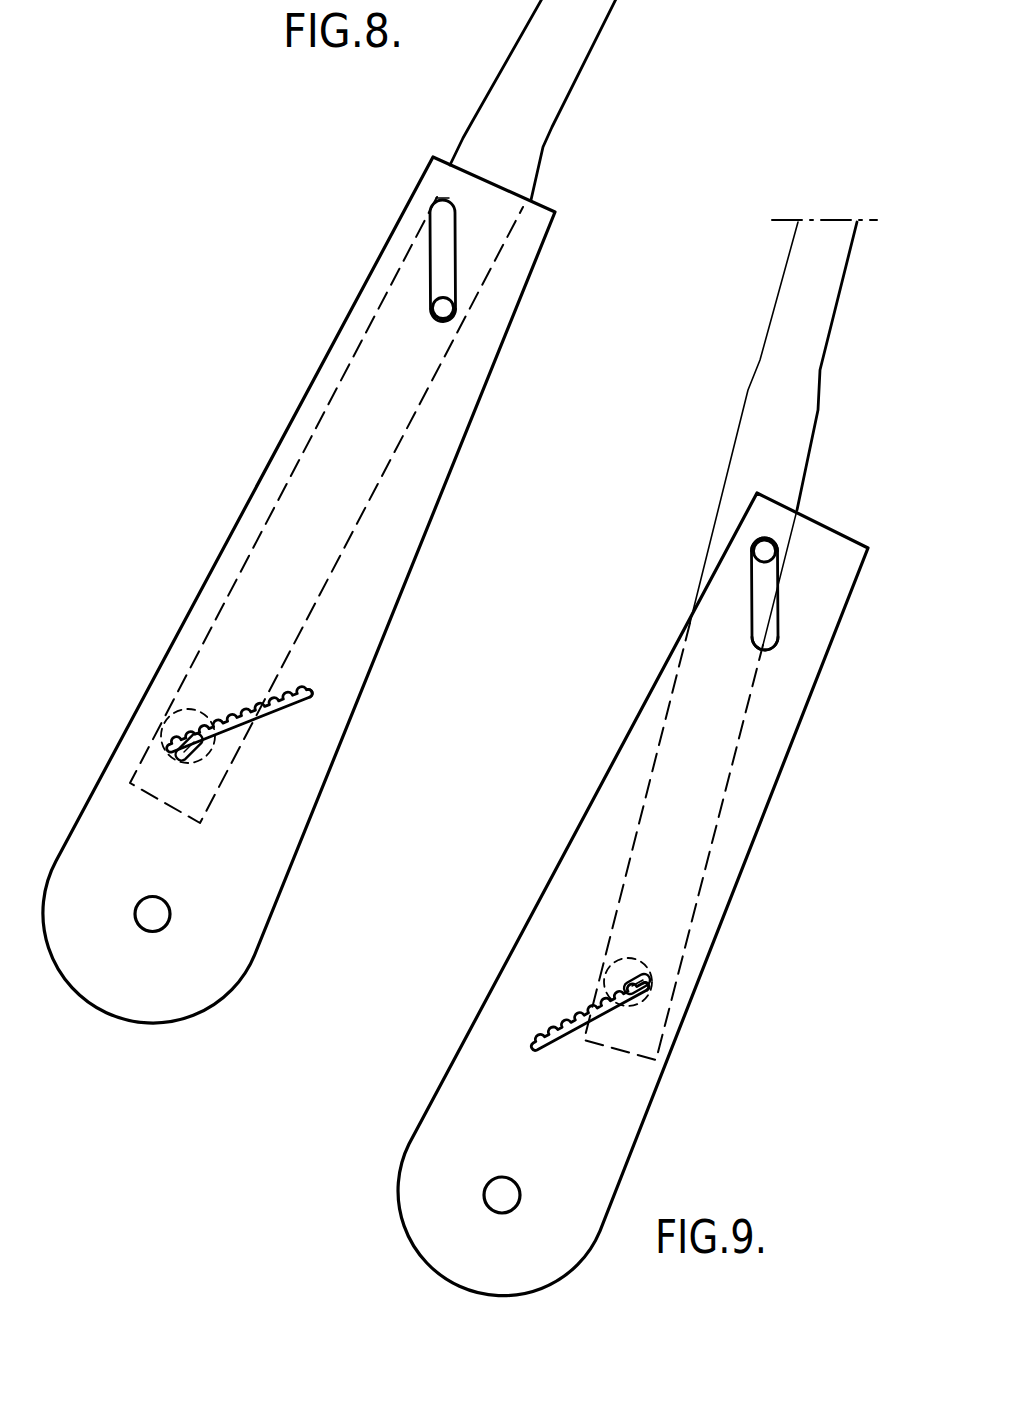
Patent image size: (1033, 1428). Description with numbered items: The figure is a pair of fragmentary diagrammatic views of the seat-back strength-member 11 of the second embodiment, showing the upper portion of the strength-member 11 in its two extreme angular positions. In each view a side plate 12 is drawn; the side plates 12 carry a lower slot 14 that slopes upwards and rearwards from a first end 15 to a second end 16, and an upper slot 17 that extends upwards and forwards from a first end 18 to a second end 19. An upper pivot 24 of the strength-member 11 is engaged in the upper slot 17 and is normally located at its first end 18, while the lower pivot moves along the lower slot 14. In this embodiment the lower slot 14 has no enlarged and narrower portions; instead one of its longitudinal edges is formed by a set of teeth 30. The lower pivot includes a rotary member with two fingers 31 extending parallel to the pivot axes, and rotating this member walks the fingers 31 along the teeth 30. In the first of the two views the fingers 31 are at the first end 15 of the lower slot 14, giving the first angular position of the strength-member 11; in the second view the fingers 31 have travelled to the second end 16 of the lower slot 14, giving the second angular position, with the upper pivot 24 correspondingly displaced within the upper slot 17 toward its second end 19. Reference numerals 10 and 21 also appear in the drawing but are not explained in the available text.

In FIG. 8, the arm 10 is at (423, 560).
In FIG. 9, the arm 10 is at (776, 798).
In FIG. 8, the strength-member 11 is at (612, 31).
In FIG. 9, the strength-member 11 is at (856, 243).
In FIG. 8, the side plate 12 is at (297, 805).
In FIG. 9, the side plate 12 is at (502, 1195).
In FIG. 8, the lower slot 14 is at (268, 720).
In FIG. 9, the lower slot 14 is at (598, 1018).
In FIG. 8, the first end 15 is at (178, 747).
In FIG. 9, the first end 15 is at (524, 1043).
In FIG. 8, the second end 16 is at (316, 690).
In FIG. 9, the second end 16 is at (652, 988).
In FIG. 8, the upper slot 17 is at (430, 253).
In FIG. 9, the upper slot 17 is at (779, 615).
In FIG. 8, the first end 18 is at (446, 318).
In FIG. 9, the first end 18 is at (772, 648).
In FIG. 8, the second end 19 is at (443, 195).
In FIG. 9, the second end 19 is at (758, 545).
In FIG. 8, the lever 21 is at (550, 77).
In FIG. 9, the lever 21 is at (818, 288).
In FIG. 8, the upper pivot 24 is at (446, 306).
In FIG. 9, the upper pivot 24 is at (766, 552).
In FIG. 8, the set of teeth 30 is at (265, 716).
In FIG. 9, the set of teeth 30 is at (592, 1000).
In FIG. 8, the fingers 31 is at (178, 745).
In FIG. 9, the fingers 31 is at (623, 988).